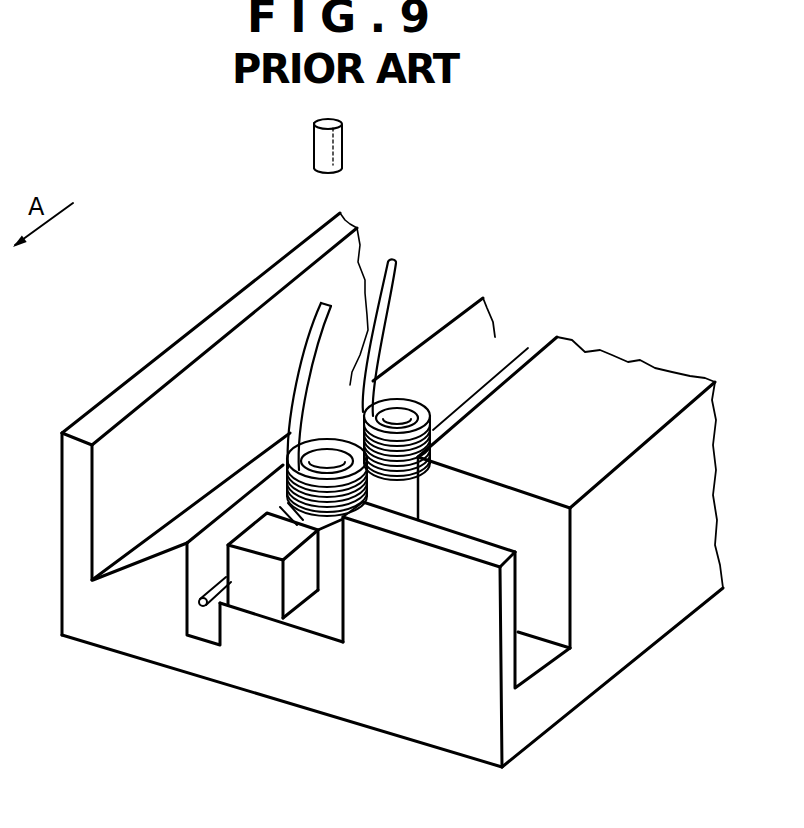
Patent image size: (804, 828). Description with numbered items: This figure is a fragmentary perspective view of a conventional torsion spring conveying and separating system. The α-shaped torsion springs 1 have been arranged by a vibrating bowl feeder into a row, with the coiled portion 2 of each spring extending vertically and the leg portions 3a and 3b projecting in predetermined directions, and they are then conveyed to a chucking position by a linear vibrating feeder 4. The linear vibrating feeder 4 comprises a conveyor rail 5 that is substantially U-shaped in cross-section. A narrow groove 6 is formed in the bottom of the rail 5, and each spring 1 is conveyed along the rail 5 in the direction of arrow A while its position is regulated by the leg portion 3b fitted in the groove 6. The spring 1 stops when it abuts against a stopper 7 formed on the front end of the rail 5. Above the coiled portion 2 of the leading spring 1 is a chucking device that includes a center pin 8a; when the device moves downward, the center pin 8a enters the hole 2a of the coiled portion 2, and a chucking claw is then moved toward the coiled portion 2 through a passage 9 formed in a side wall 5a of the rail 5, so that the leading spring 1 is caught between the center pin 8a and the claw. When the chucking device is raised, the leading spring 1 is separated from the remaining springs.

The α-shaped torsion spring 1 is at (284, 332).
The coiled portion 2 is at (425, 393).
The hole 2a is at (397, 410).
The leg portion 3a is at (395, 272).
The leg portion 3b is at (208, 590).
The linear vibrating feeder 4 is at (651, 345).
The conveyor rail 5 is at (367, 683).
The side wall 5a is at (612, 507).
The narrow groove 6 is at (212, 627).
The stopper 7 is at (267, 597).
The center pin 8a is at (342, 157).
The passage 9 is at (530, 658).